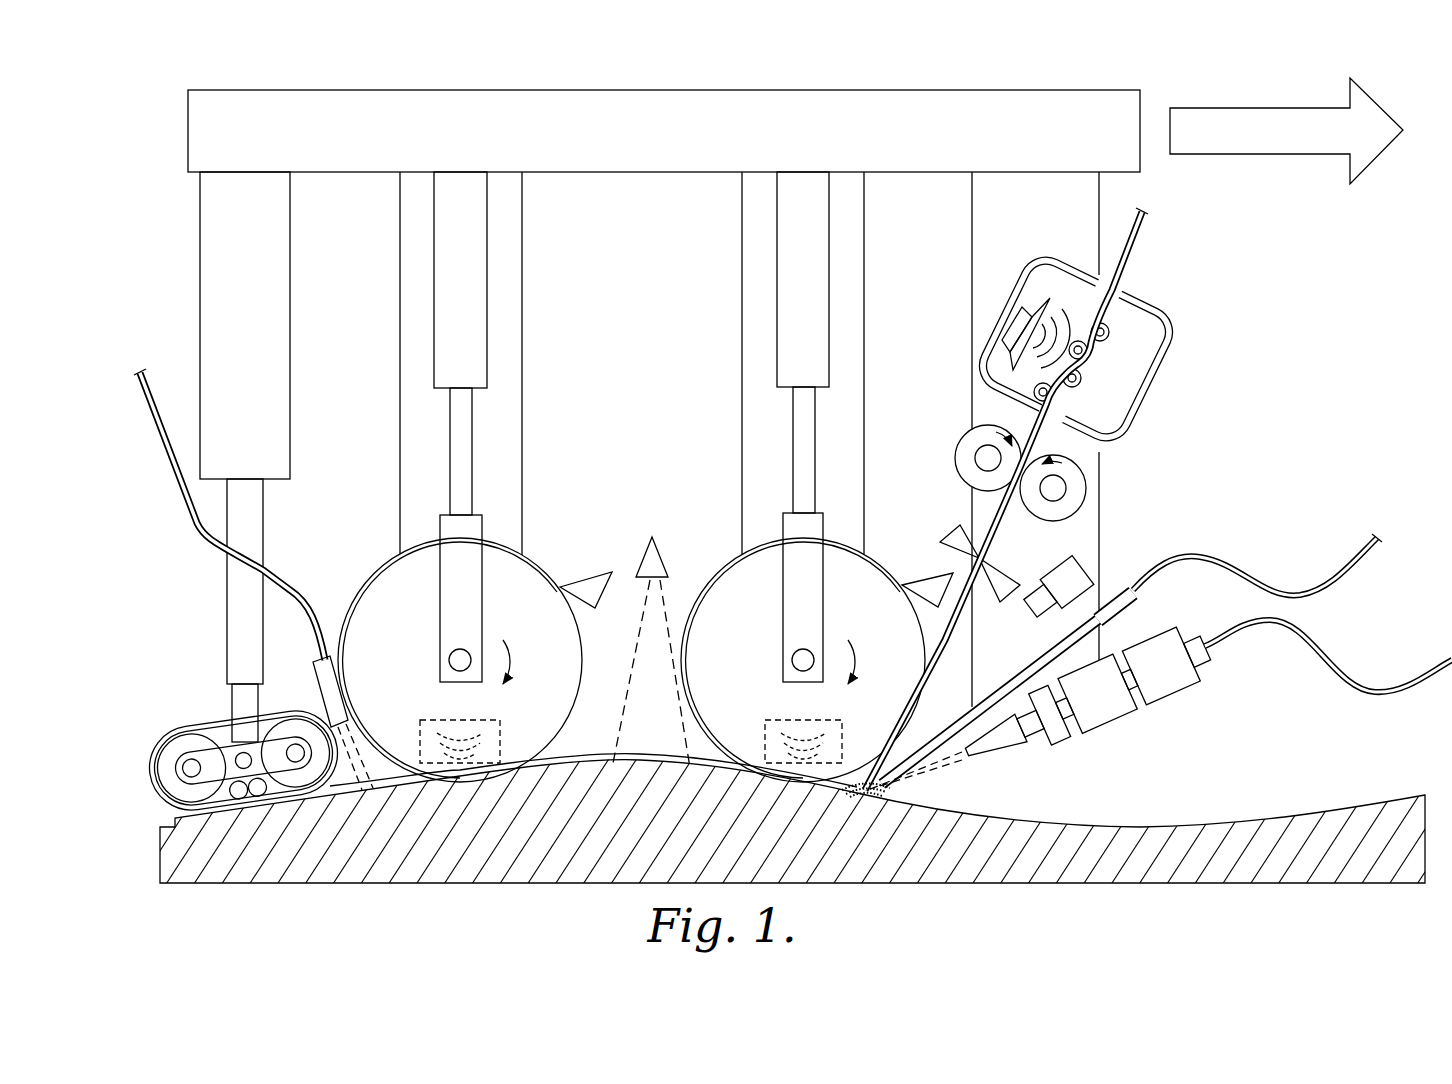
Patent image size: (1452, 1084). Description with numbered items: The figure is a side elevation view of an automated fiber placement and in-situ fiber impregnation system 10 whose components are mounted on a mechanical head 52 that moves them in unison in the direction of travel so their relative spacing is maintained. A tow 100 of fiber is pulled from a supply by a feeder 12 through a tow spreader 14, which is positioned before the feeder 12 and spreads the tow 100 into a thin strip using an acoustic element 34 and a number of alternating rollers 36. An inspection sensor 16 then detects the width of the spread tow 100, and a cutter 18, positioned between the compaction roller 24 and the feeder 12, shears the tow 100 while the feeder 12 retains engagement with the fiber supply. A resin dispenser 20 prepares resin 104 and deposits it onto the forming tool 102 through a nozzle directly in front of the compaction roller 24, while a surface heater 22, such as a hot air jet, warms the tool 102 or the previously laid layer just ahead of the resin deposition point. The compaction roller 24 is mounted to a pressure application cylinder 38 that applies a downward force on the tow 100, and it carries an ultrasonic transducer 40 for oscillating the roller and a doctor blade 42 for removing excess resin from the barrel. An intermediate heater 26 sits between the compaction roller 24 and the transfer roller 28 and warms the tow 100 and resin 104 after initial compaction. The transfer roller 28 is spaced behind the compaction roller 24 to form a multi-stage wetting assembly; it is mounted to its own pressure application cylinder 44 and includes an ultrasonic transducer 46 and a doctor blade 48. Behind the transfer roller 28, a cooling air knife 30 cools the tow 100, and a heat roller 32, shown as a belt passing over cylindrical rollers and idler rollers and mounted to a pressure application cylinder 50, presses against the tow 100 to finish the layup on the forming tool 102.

The automated fiber placement and in-situ fiber impregnation system 10 is at (1175, 66).
The feeder 12 is at (1092, 469).
The tow spreader 14 is at (1185, 297).
The inspection sensor 16 is at (1077, 570).
The cutter 18 is at (953, 526).
The resin dispenser 20 is at (1134, 578).
The surface heater 22 is at (1194, 704).
The compaction roller 24 is at (731, 546).
The intermediate heater 26 is at (646, 528).
The transfer roller 28 is at (530, 538).
The cooling air knife 30 is at (306, 678).
The heat roller 32 is at (188, 706).
The acoustic element 34 is at (1012, 330).
The alternating rollers 36 is at (1124, 356).
The pressure application cylinder 38 is at (795, 258).
The ultrasonic transducer 40 is at (770, 737).
The doctor blade 42 is at (940, 590).
The pressure application cylinder 44 is at (475, 310).
The ultrasonic transducer 46 is at (420, 737).
The doctor blade 48 is at (590, 585).
The pressure application cylinder 50 is at (270, 345).
The mechanical head 52 is at (733, 103).
The tow 100 is at (1137, 226).
The forming tool 102 is at (1295, 828).
The resin 104 is at (859, 802).